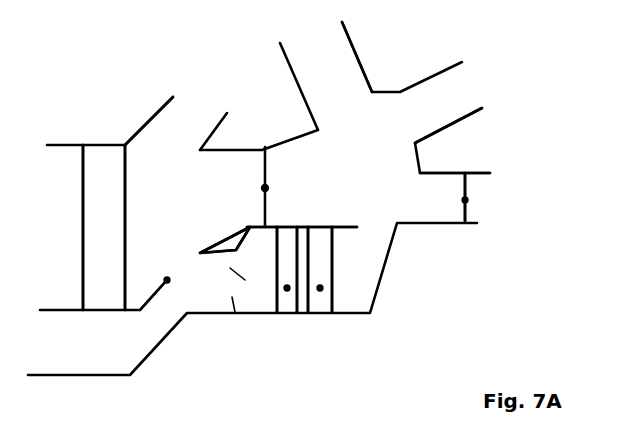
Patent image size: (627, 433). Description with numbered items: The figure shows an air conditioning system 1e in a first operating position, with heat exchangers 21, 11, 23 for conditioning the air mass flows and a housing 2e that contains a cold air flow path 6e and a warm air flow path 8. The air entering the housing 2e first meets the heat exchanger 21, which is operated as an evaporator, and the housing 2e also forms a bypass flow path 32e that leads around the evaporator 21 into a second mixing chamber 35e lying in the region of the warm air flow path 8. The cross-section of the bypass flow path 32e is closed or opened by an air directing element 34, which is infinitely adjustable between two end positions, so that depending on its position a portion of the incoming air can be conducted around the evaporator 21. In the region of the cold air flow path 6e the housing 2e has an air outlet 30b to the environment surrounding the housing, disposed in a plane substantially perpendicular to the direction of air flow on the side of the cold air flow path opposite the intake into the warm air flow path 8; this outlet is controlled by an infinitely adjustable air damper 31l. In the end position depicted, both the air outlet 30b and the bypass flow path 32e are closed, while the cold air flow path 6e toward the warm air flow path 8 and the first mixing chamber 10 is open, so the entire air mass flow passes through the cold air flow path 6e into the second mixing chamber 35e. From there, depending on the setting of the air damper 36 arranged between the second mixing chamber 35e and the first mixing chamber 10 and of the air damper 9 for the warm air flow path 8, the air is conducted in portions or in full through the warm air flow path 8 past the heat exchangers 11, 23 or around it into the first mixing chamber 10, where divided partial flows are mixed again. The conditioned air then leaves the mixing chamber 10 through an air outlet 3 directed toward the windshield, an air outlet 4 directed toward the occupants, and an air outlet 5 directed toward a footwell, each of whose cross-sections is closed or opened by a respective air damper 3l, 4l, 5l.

The heat exchanger 21 is at (98, 170).
The air damper 31l is at (200, 135).
The air outlet 30b is at (227, 113).
The air damper 36 is at (265, 188).
The housing 2e is at (303, 130).
The air outlet 3 is at (342, 99).
The air damper 3l is at (308, 70).
The air damper 4l is at (428, 103).
The air conditioning system 1e is at (533, 135).
The air outlet 4 is at (421, 126).
The mixing chamber 10 is at (378, 177).
The air outlet 5 is at (444, 209).
The air damper 5l is at (465, 200).
The second mixing chamber 35e is at (229, 205).
The cold air flow path 6e is at (163, 240).
The bypass flow path 32e is at (117, 355).
The warm air flow path 8 is at (365, 282).
The air directing element 34 is at (167, 280).
The air damper 9 is at (213, 258).
The heat exchanger 11 is at (287, 288).
The heat exchanger 23 is at (320, 288).